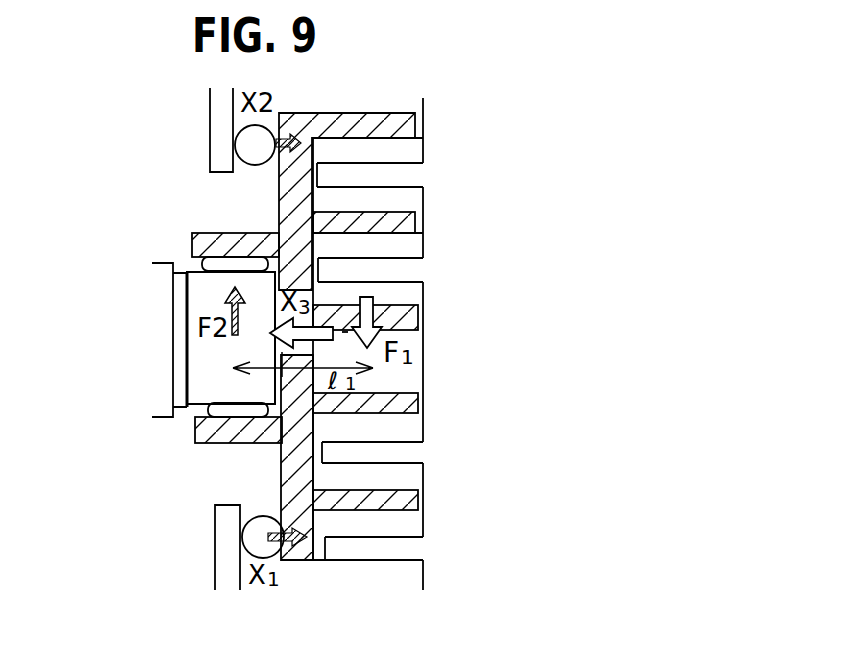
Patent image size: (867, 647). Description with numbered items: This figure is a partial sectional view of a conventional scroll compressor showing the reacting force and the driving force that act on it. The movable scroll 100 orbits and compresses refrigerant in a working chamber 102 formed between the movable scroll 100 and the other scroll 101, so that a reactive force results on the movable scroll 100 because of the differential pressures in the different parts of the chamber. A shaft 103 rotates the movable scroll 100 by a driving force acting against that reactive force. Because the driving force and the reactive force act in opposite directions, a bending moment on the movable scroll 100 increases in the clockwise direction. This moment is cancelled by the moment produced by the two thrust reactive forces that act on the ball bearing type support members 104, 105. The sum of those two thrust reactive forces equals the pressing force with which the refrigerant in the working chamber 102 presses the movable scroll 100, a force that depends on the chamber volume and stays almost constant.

The movable scroll 100 is at (392, 128).
The scroll 101 is at (380, 173).
The working chamber 102 is at (387, 152).
The shaft 103 is at (155, 320).
The ball bearing type support member 104 is at (255, 538).
The ball bearing type support member 105 is at (253, 145).